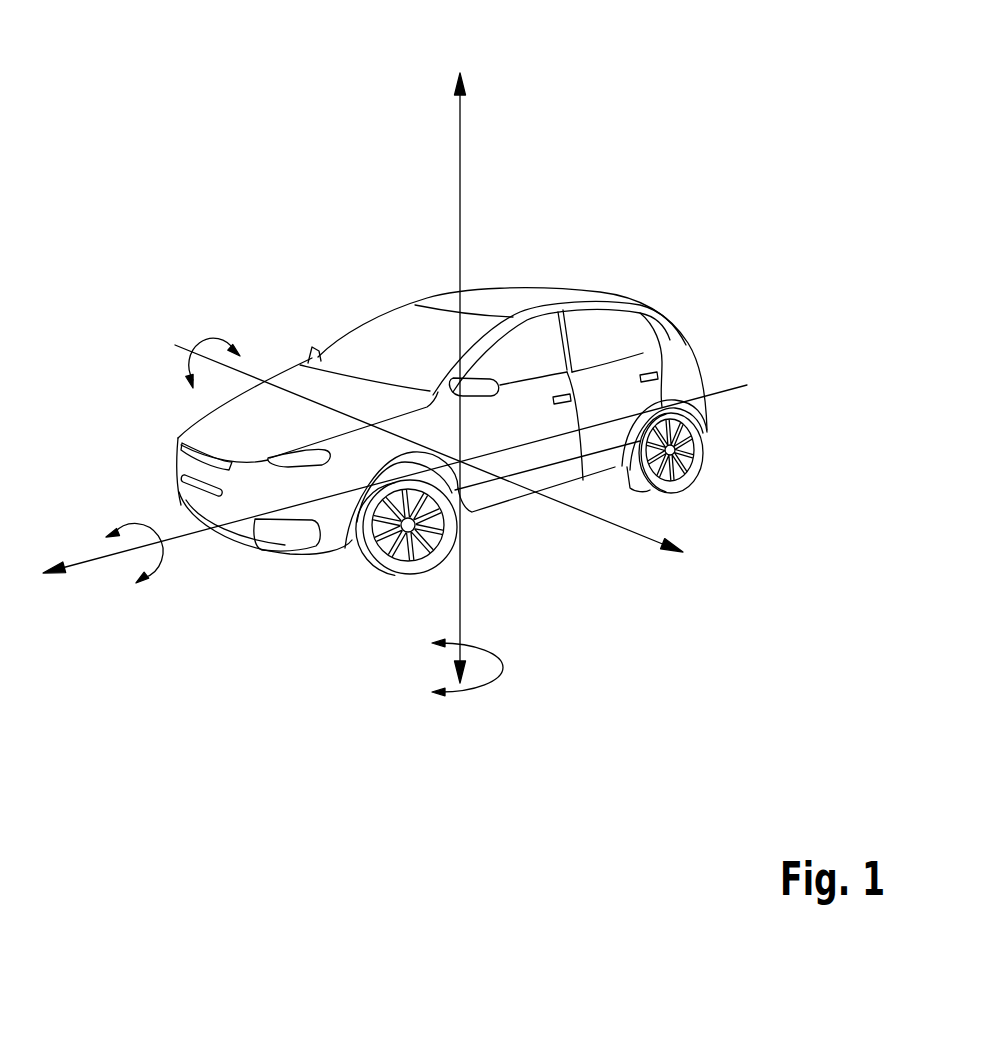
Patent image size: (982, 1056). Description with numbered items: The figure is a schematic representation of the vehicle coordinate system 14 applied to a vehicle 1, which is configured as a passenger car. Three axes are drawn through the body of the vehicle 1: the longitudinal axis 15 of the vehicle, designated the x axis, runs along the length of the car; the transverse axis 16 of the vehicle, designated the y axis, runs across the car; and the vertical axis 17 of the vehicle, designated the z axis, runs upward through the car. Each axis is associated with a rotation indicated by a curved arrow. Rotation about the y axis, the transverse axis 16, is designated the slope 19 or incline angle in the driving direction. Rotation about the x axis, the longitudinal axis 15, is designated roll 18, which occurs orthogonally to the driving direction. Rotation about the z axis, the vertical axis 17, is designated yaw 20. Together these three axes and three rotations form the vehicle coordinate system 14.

The vehicle 1 is at (672, 322).
The vehicle coordinate system 14 is at (477, 247).
The longitudinal axis 15 is at (62, 585).
The transverse axis 16 is at (675, 560).
The vertical axis 17 is at (470, 73).
The roll 18 is at (117, 503).
The slope 19 is at (192, 334).
The yaw 20 is at (486, 690).